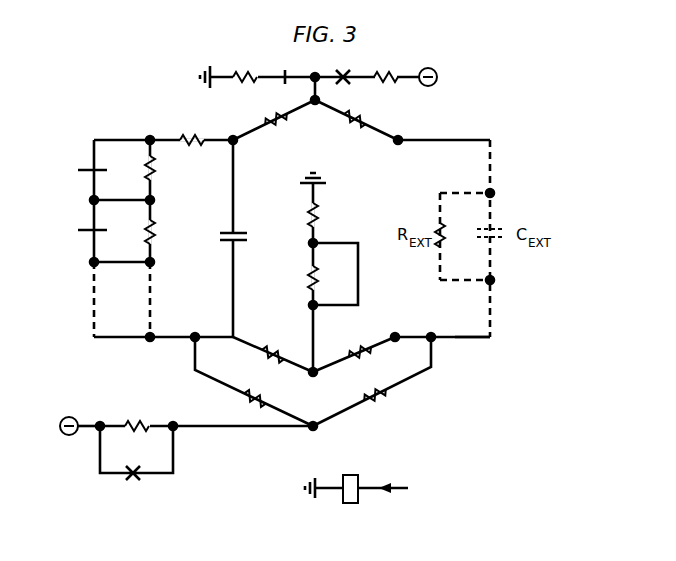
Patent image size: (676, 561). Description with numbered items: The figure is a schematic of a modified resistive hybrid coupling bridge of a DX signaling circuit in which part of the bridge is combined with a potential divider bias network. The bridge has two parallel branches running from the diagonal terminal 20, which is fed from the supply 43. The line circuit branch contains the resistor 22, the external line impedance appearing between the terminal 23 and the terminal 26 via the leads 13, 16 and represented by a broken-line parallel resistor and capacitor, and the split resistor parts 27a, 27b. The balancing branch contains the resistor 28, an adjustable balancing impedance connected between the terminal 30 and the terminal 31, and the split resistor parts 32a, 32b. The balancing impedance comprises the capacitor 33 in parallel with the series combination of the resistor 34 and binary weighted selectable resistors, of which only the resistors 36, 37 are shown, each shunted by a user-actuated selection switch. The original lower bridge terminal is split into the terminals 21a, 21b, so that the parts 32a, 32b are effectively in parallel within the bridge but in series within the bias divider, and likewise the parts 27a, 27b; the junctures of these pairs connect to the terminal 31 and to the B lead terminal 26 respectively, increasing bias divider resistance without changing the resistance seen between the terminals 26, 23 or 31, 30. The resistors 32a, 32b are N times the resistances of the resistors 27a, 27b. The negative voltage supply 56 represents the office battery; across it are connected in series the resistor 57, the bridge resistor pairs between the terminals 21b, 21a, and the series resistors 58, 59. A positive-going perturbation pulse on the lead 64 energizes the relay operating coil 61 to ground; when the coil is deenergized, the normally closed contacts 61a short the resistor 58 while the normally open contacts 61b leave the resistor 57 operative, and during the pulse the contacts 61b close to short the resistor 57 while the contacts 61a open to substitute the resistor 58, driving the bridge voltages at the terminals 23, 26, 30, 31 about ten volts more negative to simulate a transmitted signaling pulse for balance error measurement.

The supply 43 is at (428, 68).
The bridge diagonal terminal 20 is at (315, 104).
The resistor 28 is at (274, 117).
The resistor 22 is at (356, 117).
The terminal 30 is at (235, 143).
The terminal 23 is at (397, 143).
The lead 13 is at (462, 140).
The resistor 34 is at (192, 129).
The selectable resistor 36 is at (162, 168).
The selectable resistor 37 is at (162, 232).
The capacitor 33 is at (222, 237).
The terminal 31 is at (195, 333).
The resistor 59 is at (321, 208).
The resistor 58 is at (302, 305).
The normally closed contacts 61a is at (343, 276).
The split resistor part 32a is at (273, 351).
The split resistor part 32b is at (254, 381).
The split resistor part 27a is at (354, 350).
The split resistor part 27b is at (372, 381).
The terminal 21a is at (313, 376).
The terminal 26 is at (395, 333).
The lead 16 is at (455, 340).
The terminal 21b is at (315, 430).
The negative voltage supply 56 is at (79, 417).
The resistor 57 is at (204, 415).
The normally open contacts 61b is at (136, 463).
The relay operating coil 61 is at (362, 470).
The lead 64 is at (395, 486).